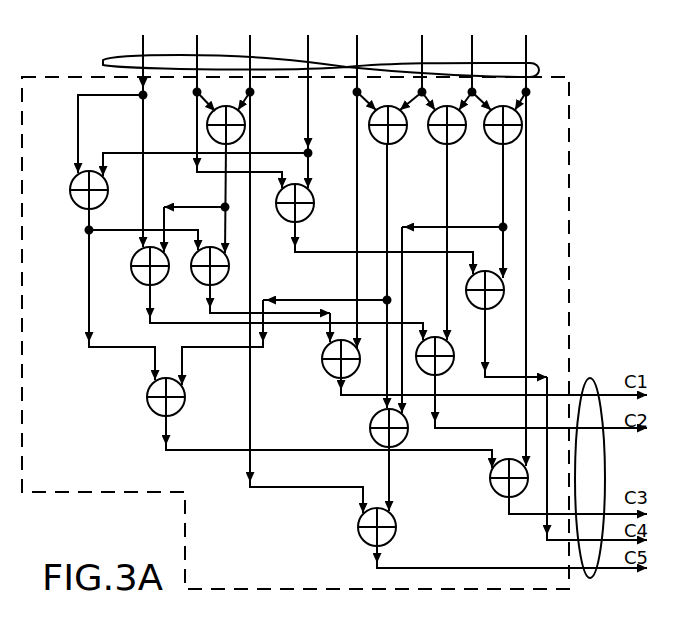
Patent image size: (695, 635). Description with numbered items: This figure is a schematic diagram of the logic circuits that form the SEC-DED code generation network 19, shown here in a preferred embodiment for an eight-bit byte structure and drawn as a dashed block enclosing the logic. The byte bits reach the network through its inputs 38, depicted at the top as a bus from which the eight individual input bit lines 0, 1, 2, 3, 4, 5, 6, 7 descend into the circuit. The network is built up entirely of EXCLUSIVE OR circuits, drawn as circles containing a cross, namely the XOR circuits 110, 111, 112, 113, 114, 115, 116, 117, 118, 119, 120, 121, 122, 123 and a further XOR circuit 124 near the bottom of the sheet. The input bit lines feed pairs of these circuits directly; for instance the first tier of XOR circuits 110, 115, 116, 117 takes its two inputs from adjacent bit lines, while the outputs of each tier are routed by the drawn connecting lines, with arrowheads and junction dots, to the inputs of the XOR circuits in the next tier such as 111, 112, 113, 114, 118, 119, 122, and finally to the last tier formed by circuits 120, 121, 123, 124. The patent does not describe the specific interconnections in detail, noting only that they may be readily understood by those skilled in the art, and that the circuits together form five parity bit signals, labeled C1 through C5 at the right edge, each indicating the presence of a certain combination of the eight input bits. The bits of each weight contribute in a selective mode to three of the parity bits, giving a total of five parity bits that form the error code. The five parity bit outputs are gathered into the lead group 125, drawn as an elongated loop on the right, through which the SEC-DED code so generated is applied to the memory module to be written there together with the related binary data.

The input bit 0 is at (143, 43).
The input bit 1 is at (197, 46).
The input bit 2 is at (250, 46).
The input bit 3 is at (308, 46).
The input bit 4 is at (357, 46).
The input bit 5 is at (422, 46).
The input bit 6 is at (472, 46).
The input bit 7 is at (526, 46).
The SEC-DED code generation network 19 is at (569, 138).
The inputs 38 is at (315, 54).
The EXCLUSIVE OR circuit 110 is at (244, 118).
The EXCLUSIVE OR circuit 111 is at (73, 199).
The EXCLUSIVE OR circuit 112 is at (139, 281).
The EXCLUSIVE OR circuit 113 is at (199, 282).
The EXCLUSIVE OR circuit 114 is at (309, 190).
The EXCLUSIVE OR circuit 115 is at (379, 142).
The EXCLUSIVE OR circuit 116 is at (457, 142).
The EXCLUSIVE OR circuit 117 is at (497, 146).
The EXCLUSIVE OR circuit 118 is at (322, 361).
The EXCLUSIVE OR circuit 119 is at (423, 337).
The EXCLUSIVE OR circuit 120 is at (147, 397).
The EXCLUSIVE OR circuit 121 is at (491, 484).
The EXCLUSIVE OR circuit 122 is at (504, 285).
The EXCLUSIVE OR circuit 123 is at (370, 428).
The EXCLUSIVE OR circuit 124 is at (358, 531).
The lead group 125 is at (592, 381).